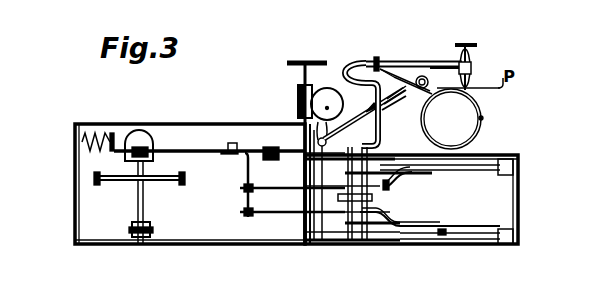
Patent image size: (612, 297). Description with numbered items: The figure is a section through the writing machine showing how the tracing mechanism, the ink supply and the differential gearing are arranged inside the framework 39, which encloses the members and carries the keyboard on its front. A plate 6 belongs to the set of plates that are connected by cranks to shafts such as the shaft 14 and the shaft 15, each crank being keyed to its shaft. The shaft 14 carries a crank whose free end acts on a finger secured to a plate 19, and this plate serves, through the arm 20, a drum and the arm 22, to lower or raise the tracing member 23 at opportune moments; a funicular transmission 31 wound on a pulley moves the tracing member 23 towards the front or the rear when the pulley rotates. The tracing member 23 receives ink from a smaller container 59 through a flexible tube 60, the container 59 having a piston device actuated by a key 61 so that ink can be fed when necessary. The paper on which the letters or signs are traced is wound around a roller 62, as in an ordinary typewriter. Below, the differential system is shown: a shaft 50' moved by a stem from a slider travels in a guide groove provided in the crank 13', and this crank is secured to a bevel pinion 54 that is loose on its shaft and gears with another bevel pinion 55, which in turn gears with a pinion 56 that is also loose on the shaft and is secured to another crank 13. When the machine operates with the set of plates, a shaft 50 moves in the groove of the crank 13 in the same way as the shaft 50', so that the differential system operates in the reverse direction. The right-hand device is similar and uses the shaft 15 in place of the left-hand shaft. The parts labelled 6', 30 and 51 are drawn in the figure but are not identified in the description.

The plate 6 is at (475, 222).
The guide rail 6' is at (497, 179).
The crank 13 is at (450, 265).
The crank 13' is at (440, 185).
The shaft 14 is at (305, 200).
The shaft 15 is at (380, 145).
The plate 19 is at (349, 124).
The arm 20 is at (394, 111).
The arm 22 is at (378, 57).
The tracing member 23 is at (471, 51).
The plate 30 is at (423, 74).
The funicular transmission 31 is at (441, 67).
The framework 39 is at (144, 244).
The shaft 50 is at (430, 244).
The shaft 50' is at (451, 119).
The stop block 51 is at (230, 142).
The bevel pinion 54 is at (398, 181).
The bevel pinion 55 is at (340, 242).
The pinion 56 is at (378, 242).
The container 59 is at (327, 164).
The flexible tube 60 is at (360, 66).
The key 61 is at (292, 61).
The roller 62 is at (483, 119).